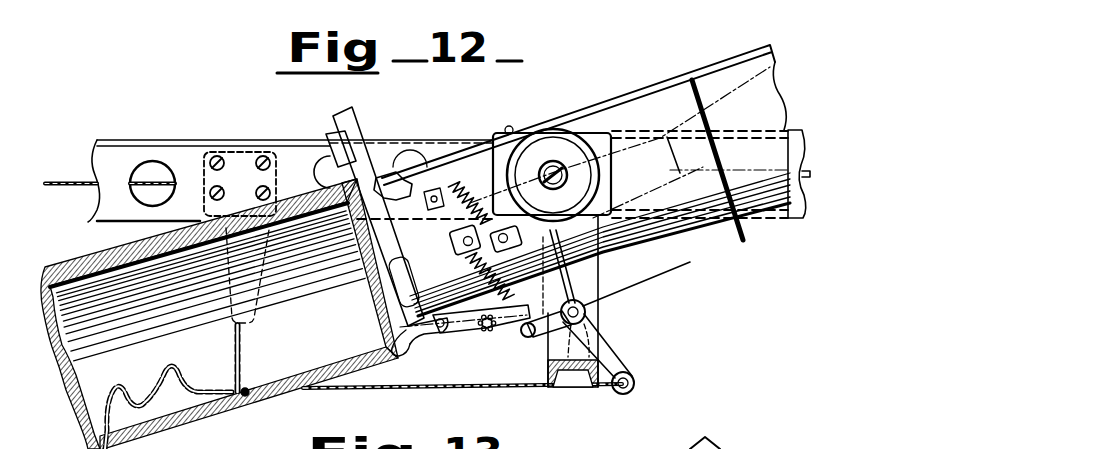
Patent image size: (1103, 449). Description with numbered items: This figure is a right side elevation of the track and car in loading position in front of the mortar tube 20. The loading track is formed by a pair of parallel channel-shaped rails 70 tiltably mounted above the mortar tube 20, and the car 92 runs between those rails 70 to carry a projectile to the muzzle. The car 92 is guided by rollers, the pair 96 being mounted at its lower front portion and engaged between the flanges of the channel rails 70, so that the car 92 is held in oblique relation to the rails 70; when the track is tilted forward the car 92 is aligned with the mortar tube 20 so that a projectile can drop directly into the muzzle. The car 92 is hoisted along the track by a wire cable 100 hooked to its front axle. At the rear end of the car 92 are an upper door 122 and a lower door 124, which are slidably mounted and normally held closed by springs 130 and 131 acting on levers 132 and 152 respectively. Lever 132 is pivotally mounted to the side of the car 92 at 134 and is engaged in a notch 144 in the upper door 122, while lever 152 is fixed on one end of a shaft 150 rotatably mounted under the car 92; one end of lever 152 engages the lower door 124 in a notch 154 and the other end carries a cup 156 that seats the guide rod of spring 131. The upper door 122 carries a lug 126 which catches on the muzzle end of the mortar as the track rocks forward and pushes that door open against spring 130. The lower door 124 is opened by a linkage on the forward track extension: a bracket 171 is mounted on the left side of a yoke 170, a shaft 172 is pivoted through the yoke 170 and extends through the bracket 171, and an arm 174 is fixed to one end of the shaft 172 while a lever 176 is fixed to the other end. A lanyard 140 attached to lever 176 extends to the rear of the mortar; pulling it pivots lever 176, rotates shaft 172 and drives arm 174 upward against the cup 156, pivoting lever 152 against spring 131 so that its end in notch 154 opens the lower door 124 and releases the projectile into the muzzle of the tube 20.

The tube 20 is at (203, 432).
The rails 70 is at (192, 138).
The car 92 is at (615, 101).
The rollers 96 is at (552, 175).
The wire cable 100 is at (77, 180).
The upper door 122 is at (399, 184).
The lower door 124 is at (440, 276).
The lug 126 is at (322, 170).
The spring 130 is at (487, 186).
The spring 131 is at (501, 267).
The lever 132 is at (452, 246).
The pivot 134 is at (452, 234).
The lanyard 140 is at (437, 389).
The notch 144 is at (396, 167).
The shaft 150 is at (468, 336).
The lever 152 is at (452, 333).
The notch 154 is at (403, 348).
The cup 156 is at (522, 336).
The yoke 170 is at (588, 303).
The bracket 171 is at (645, 283).
The shaft 172 is at (585, 324).
The arm 174 is at (572, 342).
The lever 176 is at (616, 358).